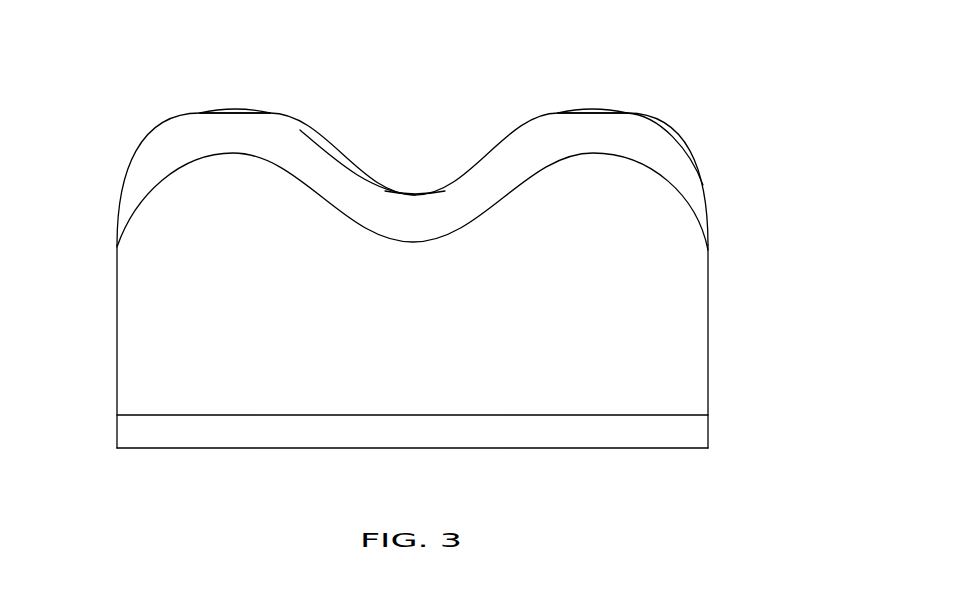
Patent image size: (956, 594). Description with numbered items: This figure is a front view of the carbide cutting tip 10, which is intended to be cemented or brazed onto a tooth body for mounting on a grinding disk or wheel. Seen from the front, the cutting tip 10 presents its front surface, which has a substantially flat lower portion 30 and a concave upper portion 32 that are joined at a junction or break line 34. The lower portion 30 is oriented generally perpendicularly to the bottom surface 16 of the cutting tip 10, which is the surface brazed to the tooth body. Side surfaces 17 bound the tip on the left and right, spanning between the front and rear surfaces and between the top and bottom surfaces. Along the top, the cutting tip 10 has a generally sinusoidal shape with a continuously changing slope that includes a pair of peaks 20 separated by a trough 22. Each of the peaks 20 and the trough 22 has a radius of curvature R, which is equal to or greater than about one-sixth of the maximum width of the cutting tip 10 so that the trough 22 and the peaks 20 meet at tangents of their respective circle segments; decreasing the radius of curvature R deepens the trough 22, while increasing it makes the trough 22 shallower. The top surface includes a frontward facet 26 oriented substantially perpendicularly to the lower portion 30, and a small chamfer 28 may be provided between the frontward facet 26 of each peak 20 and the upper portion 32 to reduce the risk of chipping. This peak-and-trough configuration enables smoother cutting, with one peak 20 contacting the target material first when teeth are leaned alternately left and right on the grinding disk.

The carbide cutting tip 10 is at (782, 212).
The bottom surface 16 is at (218, 449).
The side surfaces 17 is at (117, 280).
The peaks 20 is at (212, 107).
The trough 22 is at (435, 193).
The frontward facet 26 is at (685, 182).
The chamfer 28 is at (243, 110).
The lower portion 30 is at (688, 433).
The upper portion 32 is at (688, 325).
The break line 34 is at (708, 413).
The radius of curvature R is at (382, 190).